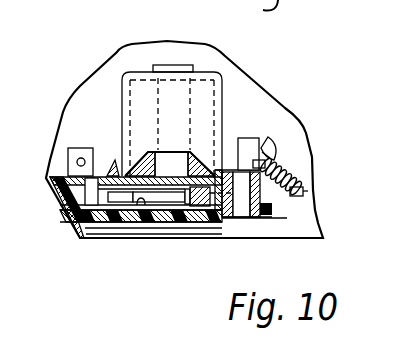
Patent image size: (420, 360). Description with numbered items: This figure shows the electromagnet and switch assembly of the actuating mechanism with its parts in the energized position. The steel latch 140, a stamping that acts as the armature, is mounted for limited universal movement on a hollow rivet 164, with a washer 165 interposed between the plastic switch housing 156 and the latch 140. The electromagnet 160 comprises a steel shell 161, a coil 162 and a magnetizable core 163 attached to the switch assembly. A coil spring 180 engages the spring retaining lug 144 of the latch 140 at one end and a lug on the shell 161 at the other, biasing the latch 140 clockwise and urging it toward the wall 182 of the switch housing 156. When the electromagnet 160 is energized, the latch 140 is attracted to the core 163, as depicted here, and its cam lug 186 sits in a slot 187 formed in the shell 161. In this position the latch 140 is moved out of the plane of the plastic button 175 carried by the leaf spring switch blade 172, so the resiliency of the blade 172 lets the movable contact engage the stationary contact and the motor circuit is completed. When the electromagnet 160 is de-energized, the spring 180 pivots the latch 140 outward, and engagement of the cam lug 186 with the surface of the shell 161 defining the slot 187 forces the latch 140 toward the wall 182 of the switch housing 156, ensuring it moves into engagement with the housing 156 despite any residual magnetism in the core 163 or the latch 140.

The latch 140 is at (163, 205).
The spring retaining lug 144 is at (268, 140).
The switch housing 156 is at (192, 188).
The electromagnet 160 is at (230, 80).
The steel shell 161 is at (226, 80).
The coil 162 is at (218, 160).
The magnetizable core 163 is at (155, 88).
The hollow rivet 164 is at (226, 222).
The washer 165 is at (268, 205).
The switch blade 172 is at (118, 205).
The plastic button 175 is at (83, 205).
The coil spring 180 is at (293, 178).
The wall of the switch housing 182 is at (140, 205).
The cam lug 186 is at (107, 173).
The slot 187 is at (97, 190).